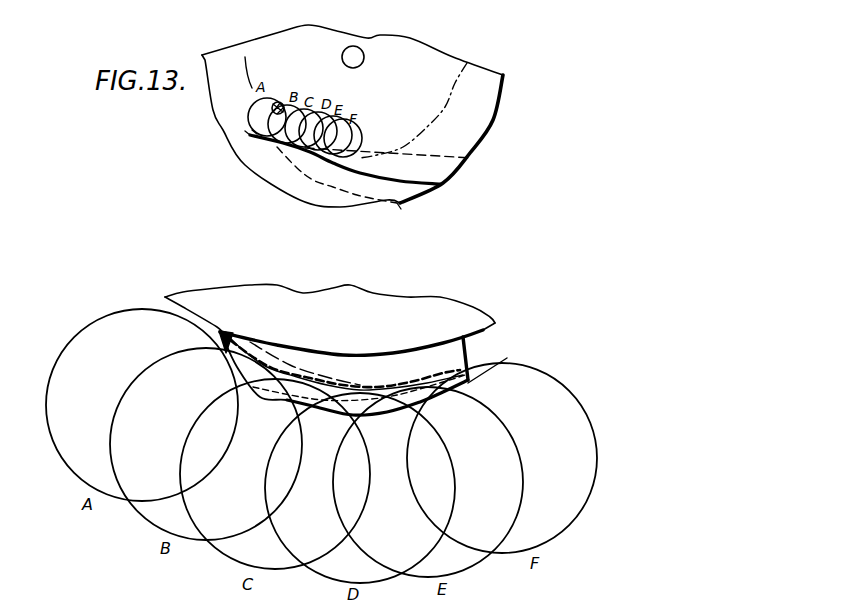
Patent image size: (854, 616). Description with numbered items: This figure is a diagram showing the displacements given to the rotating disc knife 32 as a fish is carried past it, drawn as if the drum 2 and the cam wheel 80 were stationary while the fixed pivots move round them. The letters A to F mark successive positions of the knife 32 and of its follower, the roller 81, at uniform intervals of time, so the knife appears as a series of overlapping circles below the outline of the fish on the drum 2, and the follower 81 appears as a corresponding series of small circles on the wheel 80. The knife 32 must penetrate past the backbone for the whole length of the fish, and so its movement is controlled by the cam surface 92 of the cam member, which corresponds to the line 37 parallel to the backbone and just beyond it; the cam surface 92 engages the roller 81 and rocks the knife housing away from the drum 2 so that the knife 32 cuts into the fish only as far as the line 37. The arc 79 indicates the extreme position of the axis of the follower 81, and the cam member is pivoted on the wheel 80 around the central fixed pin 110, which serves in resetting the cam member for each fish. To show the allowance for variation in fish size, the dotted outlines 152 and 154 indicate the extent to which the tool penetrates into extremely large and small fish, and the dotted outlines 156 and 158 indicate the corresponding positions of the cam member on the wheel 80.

The drum 2 is at (487, 328).
The rotating disc knife 32 is at (125, 325).
The line parallel to the backbone 37 is at (428, 373).
The arc 79 is at (460, 67).
The cam wheel 80 is at (482, 123).
The roller follower 81 is at (260, 118).
The cam surface 92 is at (440, 183).
The central fixed pin 110 is at (277, 100).
The dotted outline 152 is at (507, 358).
The dotted outline 154 is at (388, 377).
The dotted outline 156 is at (467, 160).
The dotted outline 158 is at (400, 205).